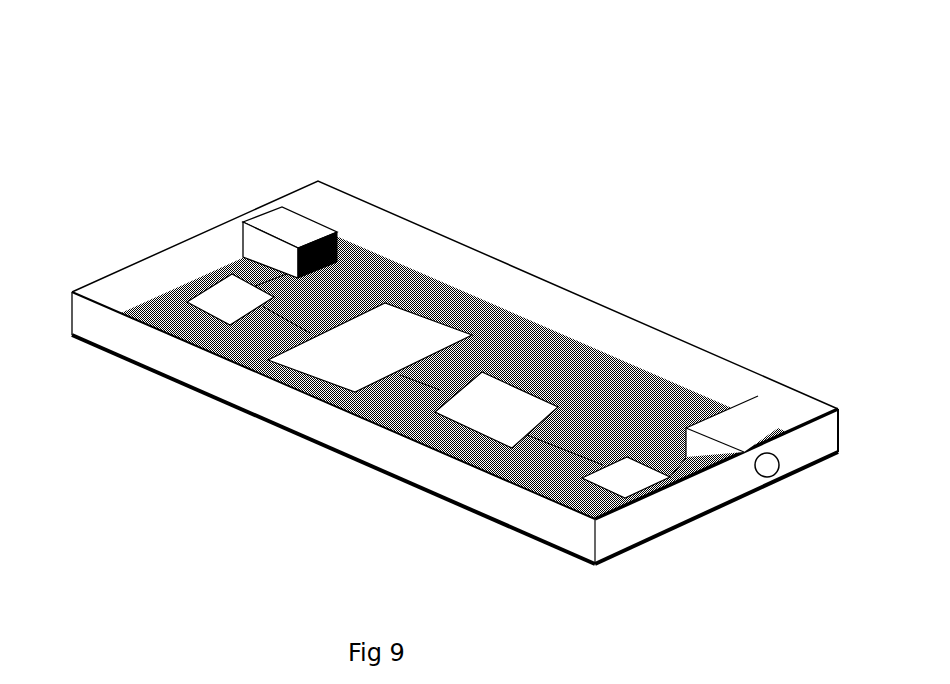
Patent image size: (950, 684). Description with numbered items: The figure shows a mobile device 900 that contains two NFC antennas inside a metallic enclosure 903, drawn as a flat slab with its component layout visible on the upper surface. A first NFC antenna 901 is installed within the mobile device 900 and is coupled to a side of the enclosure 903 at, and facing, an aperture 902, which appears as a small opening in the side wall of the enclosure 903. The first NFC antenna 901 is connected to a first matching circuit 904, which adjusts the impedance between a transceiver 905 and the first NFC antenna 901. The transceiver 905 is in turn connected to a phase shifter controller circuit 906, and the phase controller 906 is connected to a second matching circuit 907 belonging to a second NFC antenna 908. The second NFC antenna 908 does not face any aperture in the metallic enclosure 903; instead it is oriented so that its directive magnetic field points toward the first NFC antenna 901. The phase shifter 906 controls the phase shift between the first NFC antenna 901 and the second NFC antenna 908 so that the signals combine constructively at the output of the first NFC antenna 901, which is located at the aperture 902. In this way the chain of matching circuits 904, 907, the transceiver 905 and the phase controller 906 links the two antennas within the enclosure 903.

The mobile device 900 is at (241, 184).
The first NFC antenna 901 is at (708, 428).
The aperture 902 is at (764, 466).
The metallic enclosure 903 is at (203, 378).
The first matching circuit 904 is at (624, 486).
The transceiver 905 is at (489, 423).
The phase shifter controller circuit 906 is at (358, 385).
The second matching circuit 907 is at (211, 305).
The second NFC antenna 908 is at (313, 224).